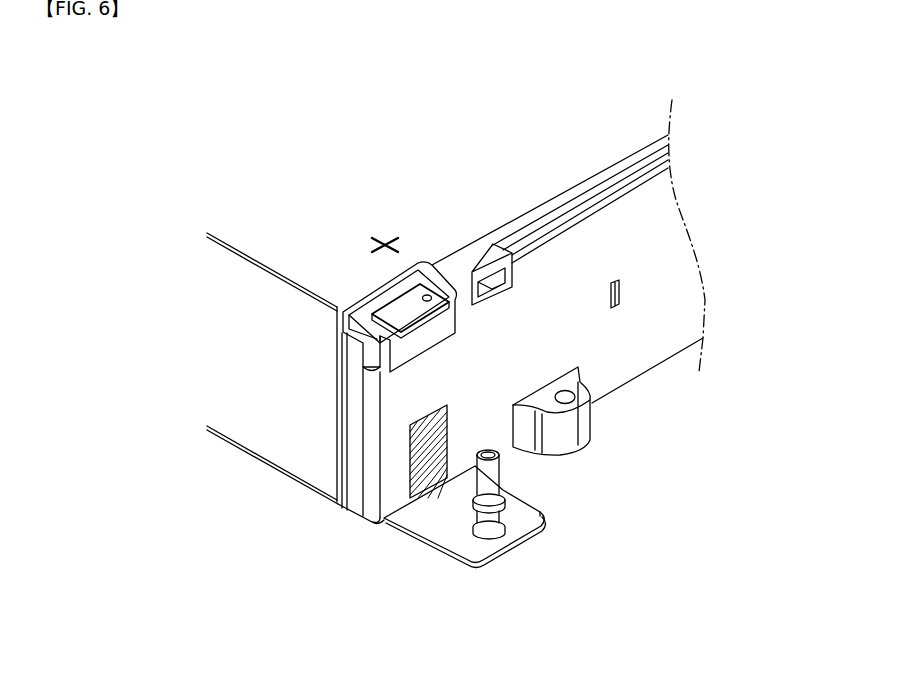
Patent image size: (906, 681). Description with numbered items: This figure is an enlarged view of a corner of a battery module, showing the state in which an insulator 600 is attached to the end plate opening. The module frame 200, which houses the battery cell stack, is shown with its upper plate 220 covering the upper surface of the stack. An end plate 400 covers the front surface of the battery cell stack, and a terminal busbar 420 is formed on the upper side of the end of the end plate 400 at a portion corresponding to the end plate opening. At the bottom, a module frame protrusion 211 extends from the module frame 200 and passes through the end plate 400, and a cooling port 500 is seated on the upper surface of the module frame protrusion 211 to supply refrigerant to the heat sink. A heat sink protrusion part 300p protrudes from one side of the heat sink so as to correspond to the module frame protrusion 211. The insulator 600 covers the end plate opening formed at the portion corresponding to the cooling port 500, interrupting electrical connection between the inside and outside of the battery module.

The module frame 200 is at (108, 193).
The upper plate 220 is at (263, 223).
The terminal busbar 420 is at (412, 300).
The end plate 400 is at (692, 268).
The cooling port 500 is at (493, 475).
The insulator 600 is at (423, 468).
The heat sink protrusion part 300p is at (455, 560).
The module frame protrusion 211 is at (510, 545).